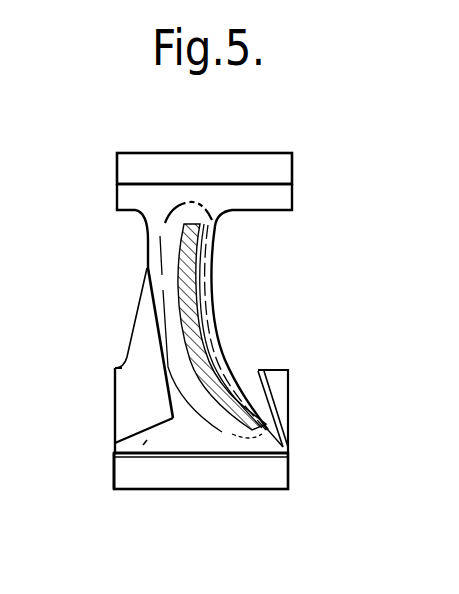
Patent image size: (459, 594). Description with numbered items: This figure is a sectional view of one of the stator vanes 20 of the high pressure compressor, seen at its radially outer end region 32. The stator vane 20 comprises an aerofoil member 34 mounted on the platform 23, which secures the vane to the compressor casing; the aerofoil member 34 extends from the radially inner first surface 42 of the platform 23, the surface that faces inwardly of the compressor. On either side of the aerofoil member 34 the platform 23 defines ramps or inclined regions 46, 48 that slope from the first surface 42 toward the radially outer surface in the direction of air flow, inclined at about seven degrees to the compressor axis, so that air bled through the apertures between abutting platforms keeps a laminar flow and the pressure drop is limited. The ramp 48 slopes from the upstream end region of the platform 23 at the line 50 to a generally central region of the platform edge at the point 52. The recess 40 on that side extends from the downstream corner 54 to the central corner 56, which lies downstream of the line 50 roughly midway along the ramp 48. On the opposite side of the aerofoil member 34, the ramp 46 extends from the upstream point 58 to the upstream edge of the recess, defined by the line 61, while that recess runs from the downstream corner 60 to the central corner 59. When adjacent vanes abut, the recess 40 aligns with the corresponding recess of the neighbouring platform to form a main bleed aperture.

The stator vane 20 is at (160, 133).
The platform 23 is at (265, 502).
The radially outer end region 32 is at (170, 507).
The aerofoil member 34 is at (207, 277).
The recess 40 is at (133, 332).
The radially inner first surface 42 is at (142, 445).
The ramp 46 is at (280, 394).
The ramp 48 is at (135, 394).
The line 50 is at (140, 433).
The point 52 is at (146, 268).
The corner 54 is at (117, 210).
The corner 56 is at (117, 368).
The point 58 is at (288, 436).
The corner 59 is at (288, 369).
The corner 60 is at (292, 210).
The line 61 is at (276, 368).